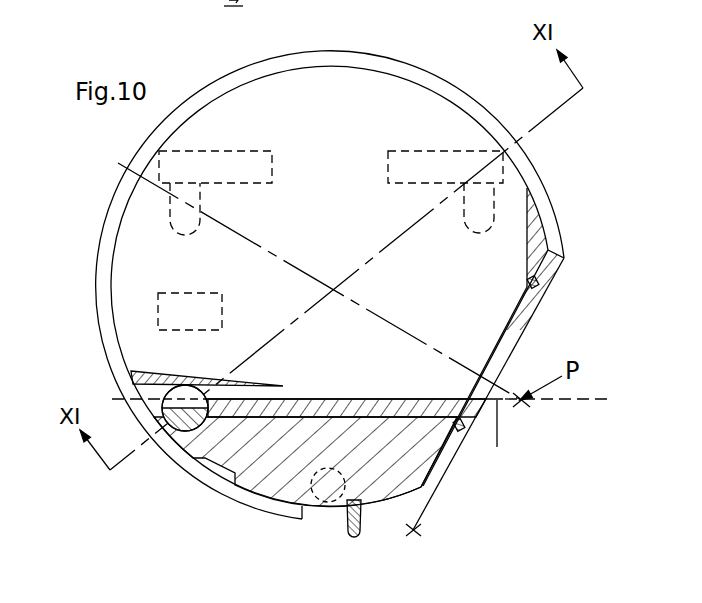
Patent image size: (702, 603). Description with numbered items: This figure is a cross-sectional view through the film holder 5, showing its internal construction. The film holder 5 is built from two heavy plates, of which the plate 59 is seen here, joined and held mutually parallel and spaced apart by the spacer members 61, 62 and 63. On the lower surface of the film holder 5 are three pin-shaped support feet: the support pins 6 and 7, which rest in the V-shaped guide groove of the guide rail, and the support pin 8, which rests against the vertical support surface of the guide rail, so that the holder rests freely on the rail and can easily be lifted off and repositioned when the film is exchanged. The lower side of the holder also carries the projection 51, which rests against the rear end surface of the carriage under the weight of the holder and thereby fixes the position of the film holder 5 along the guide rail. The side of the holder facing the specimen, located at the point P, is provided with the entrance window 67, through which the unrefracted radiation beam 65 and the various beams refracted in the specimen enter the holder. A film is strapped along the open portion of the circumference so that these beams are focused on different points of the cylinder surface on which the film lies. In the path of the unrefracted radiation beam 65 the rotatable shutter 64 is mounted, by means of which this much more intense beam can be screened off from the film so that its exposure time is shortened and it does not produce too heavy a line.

The film holder 5 is at (113, 184).
The support pin 6 is at (190, 216).
The support pin 7 is at (474, 202).
The support pin 8 is at (320, 488).
The projection 51 is at (177, 314).
The plate 59 is at (145, 345).
The spacer member 61 is at (265, 455).
The spacer member 62 is at (532, 253).
The spacer member 63 is at (133, 378).
The rotatable shutter 64 is at (183, 422).
The unrefracted radiation beam 65 is at (500, 440).
The entrance window 67 is at (504, 338).